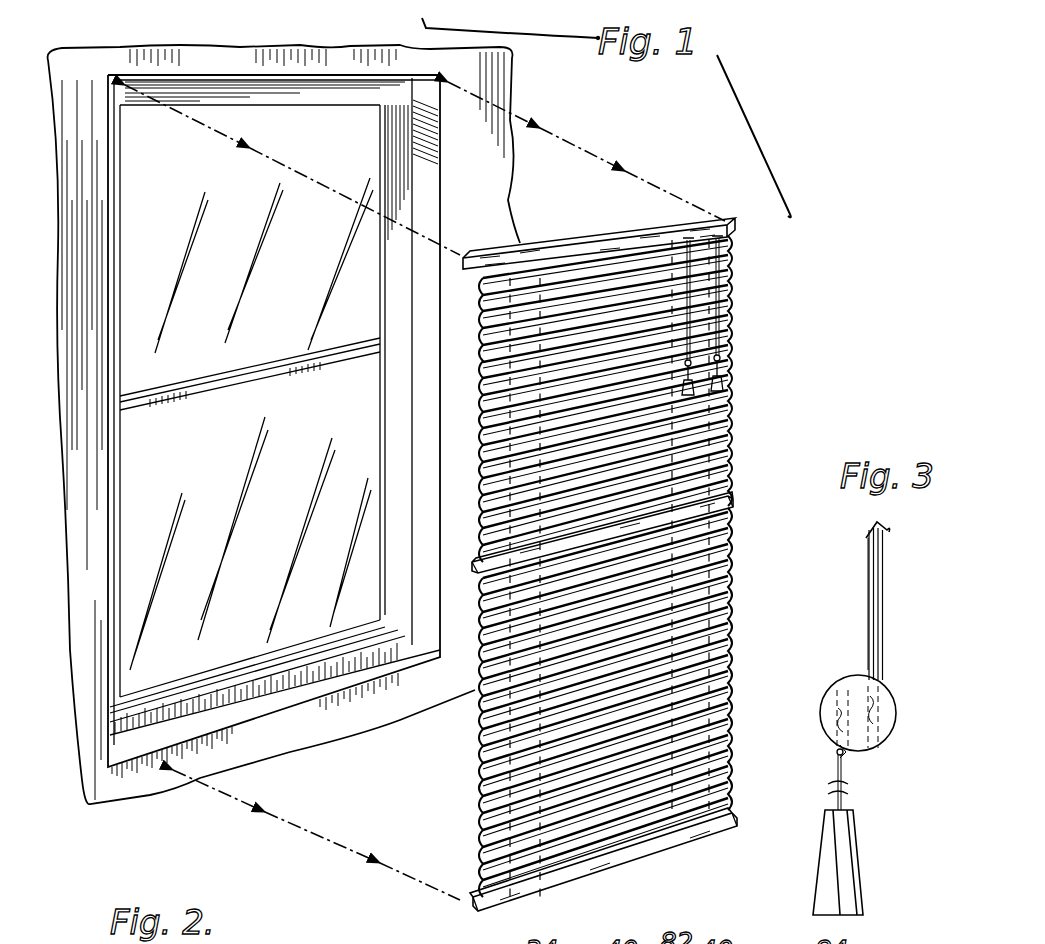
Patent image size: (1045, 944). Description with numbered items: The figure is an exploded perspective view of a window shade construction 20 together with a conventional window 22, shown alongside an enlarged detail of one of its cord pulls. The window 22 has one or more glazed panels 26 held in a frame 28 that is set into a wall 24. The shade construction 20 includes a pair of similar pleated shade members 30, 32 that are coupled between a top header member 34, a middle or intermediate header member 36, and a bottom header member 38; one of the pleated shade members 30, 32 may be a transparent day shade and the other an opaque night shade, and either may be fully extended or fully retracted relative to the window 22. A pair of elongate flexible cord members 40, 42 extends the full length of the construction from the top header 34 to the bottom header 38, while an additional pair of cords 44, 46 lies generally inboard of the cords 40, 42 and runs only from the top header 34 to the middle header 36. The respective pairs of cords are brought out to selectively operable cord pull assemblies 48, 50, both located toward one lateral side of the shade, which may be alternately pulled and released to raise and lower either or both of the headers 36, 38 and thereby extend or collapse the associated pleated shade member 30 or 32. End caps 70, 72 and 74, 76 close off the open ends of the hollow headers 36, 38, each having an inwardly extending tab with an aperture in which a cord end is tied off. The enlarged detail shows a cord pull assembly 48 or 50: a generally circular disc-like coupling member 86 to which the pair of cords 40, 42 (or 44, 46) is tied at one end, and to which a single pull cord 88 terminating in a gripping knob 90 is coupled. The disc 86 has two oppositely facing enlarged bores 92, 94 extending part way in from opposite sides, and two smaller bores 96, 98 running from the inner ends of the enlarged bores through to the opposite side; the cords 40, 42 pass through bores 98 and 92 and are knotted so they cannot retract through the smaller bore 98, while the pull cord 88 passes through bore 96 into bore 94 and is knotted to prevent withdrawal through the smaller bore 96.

In FIG. 1, the window shade construction 20 is at (621, 564).
In FIG. 1, the window 22 is at (100, 612).
In FIG. 1, the wall 24 is at (492, 183).
In FIG. 1, the glazed panels 26 is at (190, 197).
In FIG. 1, the frame 28 is at (286, 96).
In FIG. 1, the pleated shade member 30 is at (601, 566).
In FIG. 1, the pleated shade member 32 is at (485, 822).
In FIG. 1, the top header member 34 is at (727, 232).
In FIG. 1, the middle header member 36 is at (733, 513).
In FIG. 1, the bottom header member 38 is at (620, 868).
In FIG. 1, the cord member 40 is at (500, 372).
In FIG. 3, the cord member 40 is at (868, 598).
In FIG. 1, the cord member 42 is at (729, 619).
In FIG. 3, the cord member 42 is at (880, 600).
In FIG. 1, the cord 44 is at (505, 450).
In FIG. 1, the cord 46 is at (712, 426).
In FIG. 1, the cord pull assembly 48 is at (722, 402).
In FIG. 3, the cord pull assembly 48 is at (865, 822).
In FIG. 1, the cord pull assembly 50 is at (739, 342).
In FIG. 1, the end cap 70 is at (473, 896).
In FIG. 1, the end cap 72 is at (737, 816).
In FIG. 1, the end cap 74 is at (473, 561).
In FIG. 1, the end cap 76 is at (735, 502).
In FIG. 3, the disc-like coupling member 86 is at (874, 702).
In FIG. 3, the pull cord 88 is at (848, 782).
In FIG. 3, the gripping knob 90 is at (858, 864).
In FIG. 3, the enlarged bore 92 is at (866, 754).
In FIG. 3, the enlarged bore 94 is at (840, 685).
In FIG. 3, the smaller bore 96 is at (835, 758).
In FIG. 3, the smaller bore 98 is at (888, 685).